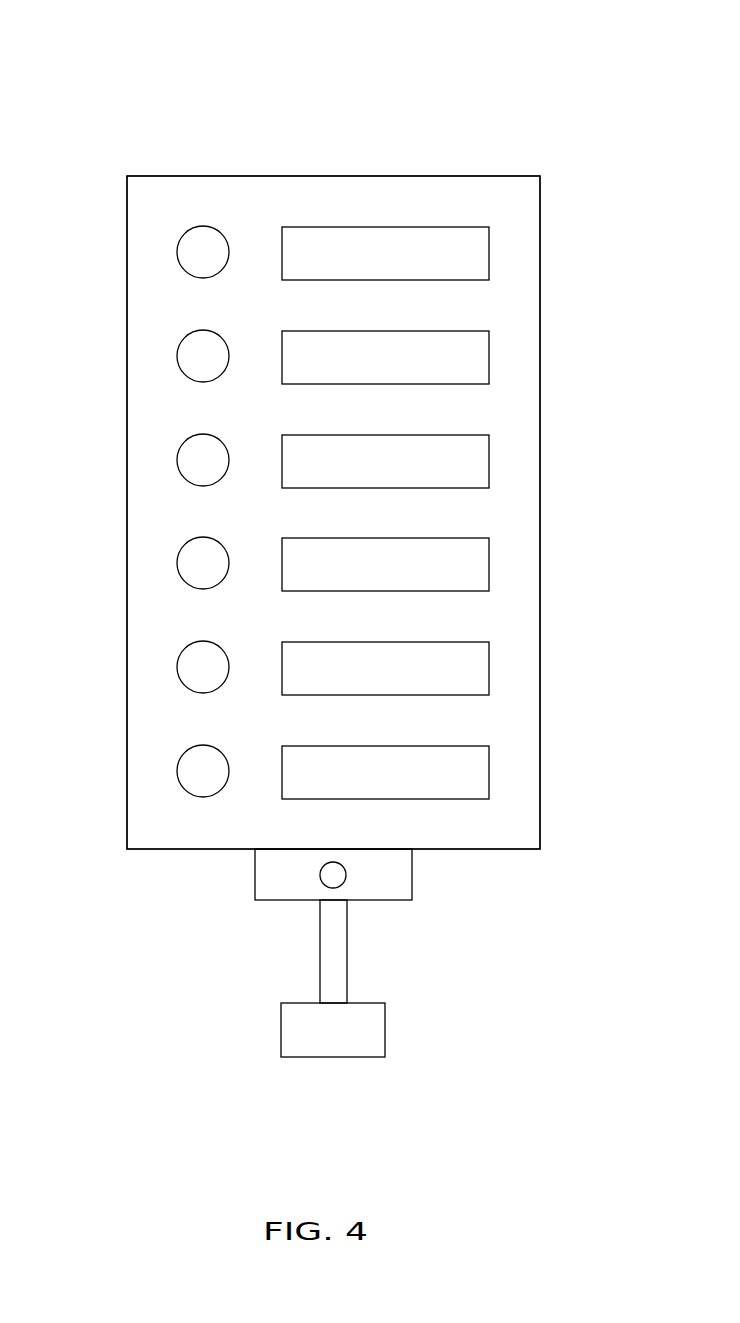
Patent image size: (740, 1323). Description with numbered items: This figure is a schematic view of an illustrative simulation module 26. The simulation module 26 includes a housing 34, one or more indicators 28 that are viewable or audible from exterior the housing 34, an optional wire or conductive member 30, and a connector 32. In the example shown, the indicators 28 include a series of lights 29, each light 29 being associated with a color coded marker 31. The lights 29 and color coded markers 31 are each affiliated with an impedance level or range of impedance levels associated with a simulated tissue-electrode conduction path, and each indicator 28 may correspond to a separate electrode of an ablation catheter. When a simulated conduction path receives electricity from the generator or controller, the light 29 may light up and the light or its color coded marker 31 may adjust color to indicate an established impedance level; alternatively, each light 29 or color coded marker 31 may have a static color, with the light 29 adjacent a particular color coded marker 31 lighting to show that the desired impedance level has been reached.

The simulation module 26 is at (217, 65).
The housing 34 is at (520, 176).
The lights 29 is at (180, 245).
The indicators 28 is at (186, 283).
The color coded markers 31 is at (470, 227).
The wire or conductive member 30 is at (348, 957).
The connector 32 is at (385, 1030).